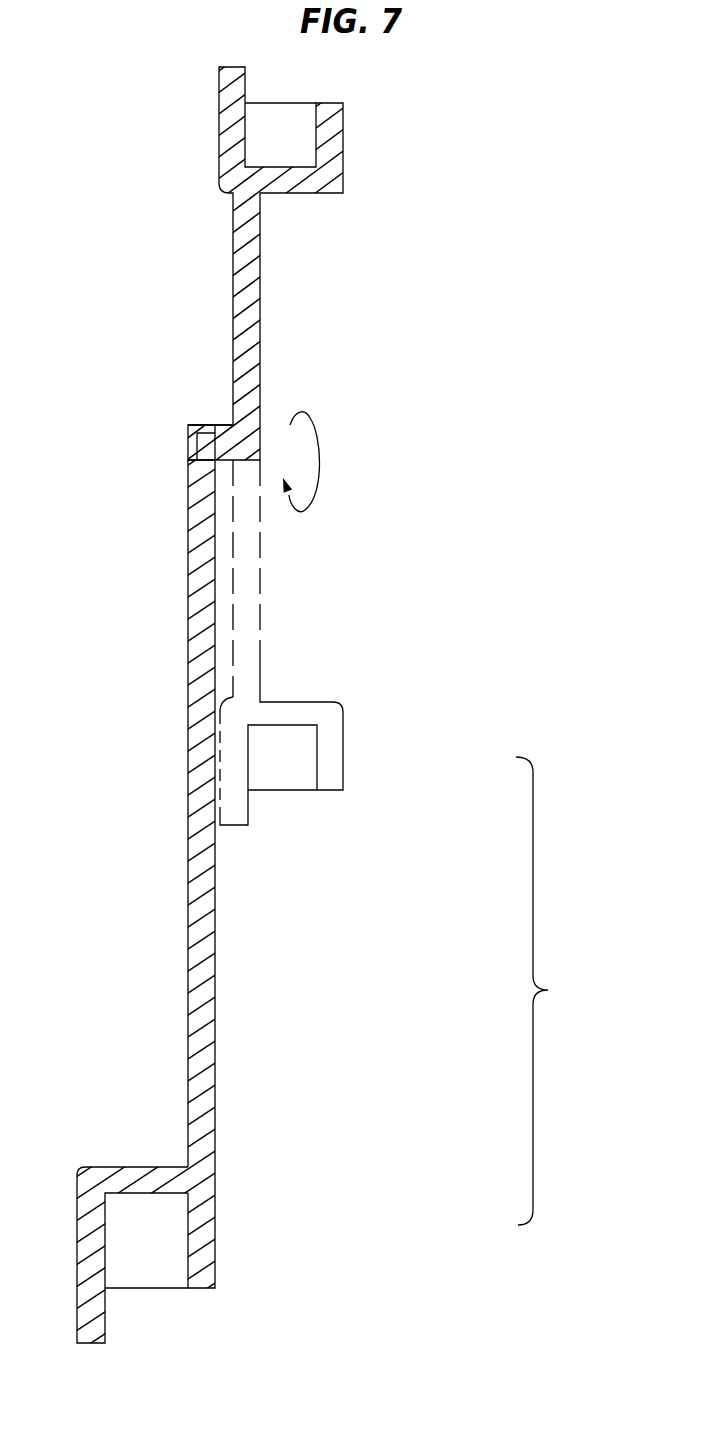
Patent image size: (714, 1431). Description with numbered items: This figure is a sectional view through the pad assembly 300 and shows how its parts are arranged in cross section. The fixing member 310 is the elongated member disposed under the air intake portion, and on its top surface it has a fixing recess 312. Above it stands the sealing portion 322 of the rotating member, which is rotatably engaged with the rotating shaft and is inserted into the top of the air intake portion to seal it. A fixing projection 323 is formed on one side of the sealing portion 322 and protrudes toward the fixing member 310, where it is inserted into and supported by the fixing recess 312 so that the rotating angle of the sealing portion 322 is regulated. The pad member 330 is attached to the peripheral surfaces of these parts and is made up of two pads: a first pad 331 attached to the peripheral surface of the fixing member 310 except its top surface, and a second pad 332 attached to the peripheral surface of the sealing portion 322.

The pad assembly 300 is at (416, 530).
The fixing member 310 is at (198, 738).
The fixing recess 312 is at (217, 438).
The sealing portion 322 is at (258, 254).
The fixing projection 323 is at (205, 441).
The pad member 330 is at (567, 991).
The first pad 331 is at (165, 1225).
The second pad 332 is at (300, 755).